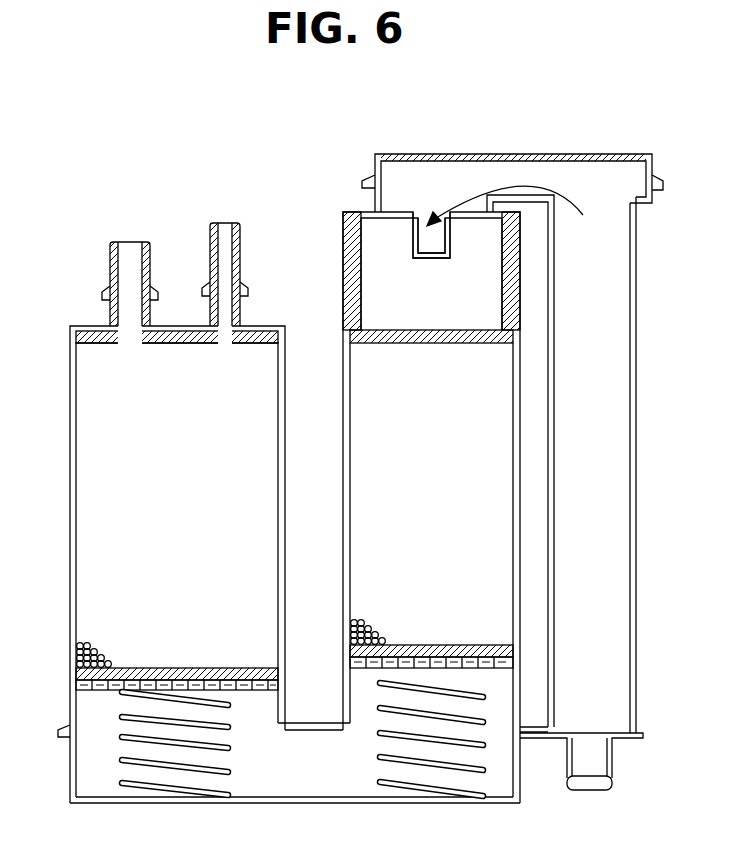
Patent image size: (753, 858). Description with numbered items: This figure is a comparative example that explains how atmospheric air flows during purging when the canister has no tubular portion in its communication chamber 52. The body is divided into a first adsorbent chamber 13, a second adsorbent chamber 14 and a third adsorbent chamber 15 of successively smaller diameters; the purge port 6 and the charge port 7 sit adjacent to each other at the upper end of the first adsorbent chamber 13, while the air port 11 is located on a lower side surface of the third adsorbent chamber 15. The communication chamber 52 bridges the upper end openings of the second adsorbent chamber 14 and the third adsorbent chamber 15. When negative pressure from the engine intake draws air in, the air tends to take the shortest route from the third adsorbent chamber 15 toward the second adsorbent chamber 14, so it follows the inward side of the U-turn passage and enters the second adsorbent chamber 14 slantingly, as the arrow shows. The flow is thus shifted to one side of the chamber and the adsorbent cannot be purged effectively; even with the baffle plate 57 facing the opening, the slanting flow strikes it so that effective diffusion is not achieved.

The purge port 6 is at (223, 258).
The charge port 7 is at (127, 270).
The air port 11 is at (595, 760).
The first adsorbent chamber 13 is at (78, 463).
The second adsorbent chamber 14 is at (372, 498).
The third adsorbent chamber 15 is at (617, 520).
The communication chamber 52 is at (448, 157).
The baffle plate 57 is at (430, 258).